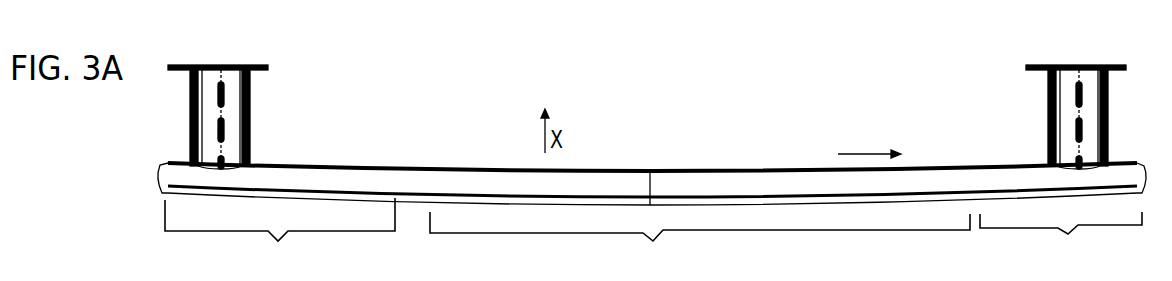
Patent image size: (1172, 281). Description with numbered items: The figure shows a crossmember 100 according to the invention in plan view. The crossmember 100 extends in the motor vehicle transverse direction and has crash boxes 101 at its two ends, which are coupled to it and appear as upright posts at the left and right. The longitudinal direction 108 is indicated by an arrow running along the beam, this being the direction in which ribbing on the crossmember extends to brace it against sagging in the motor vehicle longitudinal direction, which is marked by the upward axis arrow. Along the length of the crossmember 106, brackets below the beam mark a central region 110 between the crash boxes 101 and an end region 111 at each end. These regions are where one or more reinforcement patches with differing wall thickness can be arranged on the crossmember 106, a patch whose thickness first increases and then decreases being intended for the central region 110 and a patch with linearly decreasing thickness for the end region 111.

The crossmember 100 is at (449, 111).
The crash box 101 is at (240, 130).
The crossmember 106 is at (743, 180).
The longitudinal direction 108 is at (869, 142).
The central region 110 is at (700, 240).
The end region 111 is at (653, 239).